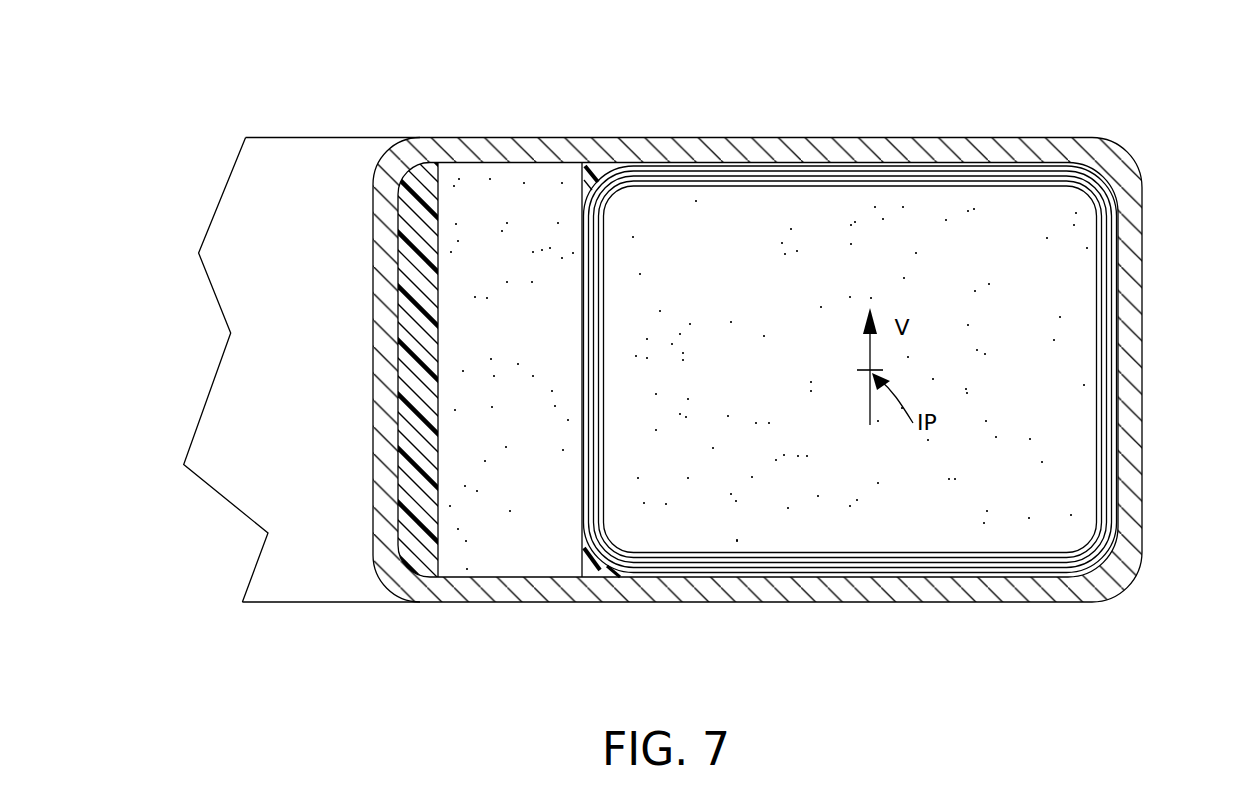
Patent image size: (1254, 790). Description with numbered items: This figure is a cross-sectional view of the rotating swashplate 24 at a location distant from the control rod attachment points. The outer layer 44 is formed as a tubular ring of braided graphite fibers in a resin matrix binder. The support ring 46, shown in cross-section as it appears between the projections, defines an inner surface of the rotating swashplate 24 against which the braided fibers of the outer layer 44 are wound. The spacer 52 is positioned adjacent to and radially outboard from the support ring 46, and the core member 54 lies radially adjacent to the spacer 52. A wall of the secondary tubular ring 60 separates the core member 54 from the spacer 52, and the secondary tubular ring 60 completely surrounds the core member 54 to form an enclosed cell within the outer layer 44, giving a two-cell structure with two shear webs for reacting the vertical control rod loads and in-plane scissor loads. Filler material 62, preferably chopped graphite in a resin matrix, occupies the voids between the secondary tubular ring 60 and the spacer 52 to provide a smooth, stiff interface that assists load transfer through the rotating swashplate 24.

The rotating swashplate 24 is at (1163, 110).
The outer layer 44 is at (647, 590).
The support ring 46 is at (424, 170).
The spacer 52 is at (512, 210).
The core member 54 is at (807, 268).
The secondary tubular ring 60 is at (1112, 337).
The filler material 62 is at (588, 168).